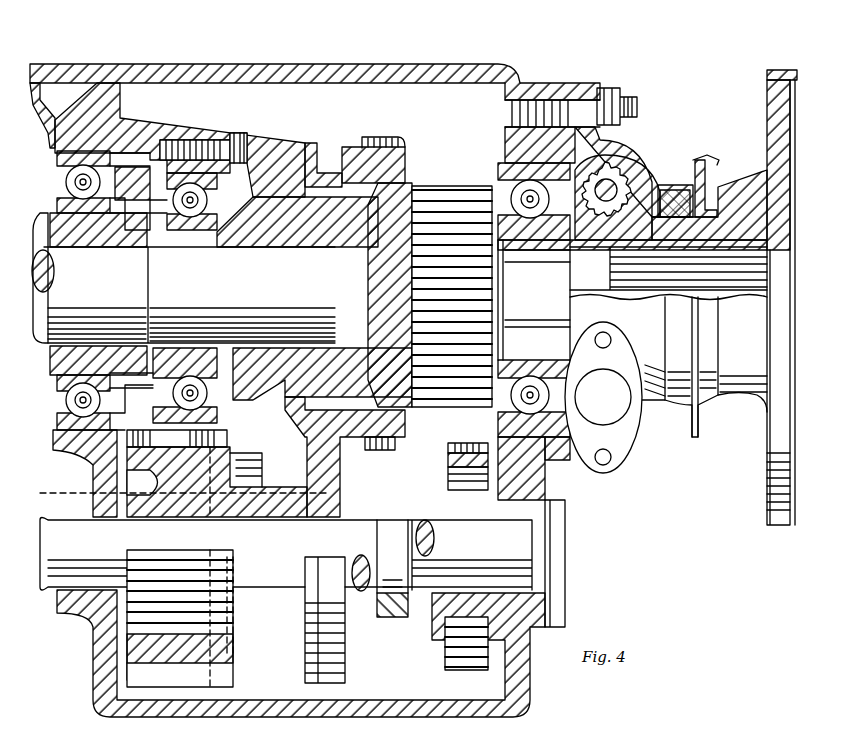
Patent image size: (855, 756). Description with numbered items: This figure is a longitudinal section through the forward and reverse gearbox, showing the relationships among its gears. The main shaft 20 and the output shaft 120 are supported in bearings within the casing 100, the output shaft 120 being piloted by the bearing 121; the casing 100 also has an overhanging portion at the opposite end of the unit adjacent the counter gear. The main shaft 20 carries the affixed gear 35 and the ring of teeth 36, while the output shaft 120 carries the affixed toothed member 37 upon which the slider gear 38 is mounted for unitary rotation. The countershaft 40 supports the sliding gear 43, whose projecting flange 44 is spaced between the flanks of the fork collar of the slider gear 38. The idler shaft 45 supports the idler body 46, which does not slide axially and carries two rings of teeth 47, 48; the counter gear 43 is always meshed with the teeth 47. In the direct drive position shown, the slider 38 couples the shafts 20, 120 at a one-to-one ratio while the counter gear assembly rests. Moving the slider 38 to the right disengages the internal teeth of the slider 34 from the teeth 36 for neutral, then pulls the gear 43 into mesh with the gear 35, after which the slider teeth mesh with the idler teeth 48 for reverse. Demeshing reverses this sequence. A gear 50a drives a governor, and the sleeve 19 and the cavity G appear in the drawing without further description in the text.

The gear housing cavity G is at (143, 85).
The casing 100 is at (462, 72).
The drive shaft sleeve 19 is at (50, 217).
The main shaft 20 is at (50, 346).
The gear 35 is at (267, 147).
The ring of teeth 36 is at (342, 167).
The slider gear 38 is at (372, 137).
The slider 34 is at (405, 160).
The toothed member 37 is at (427, 188).
The bearing 121 is at (515, 200).
The gear 50a is at (620, 181).
The output shaft 120 is at (730, 247).
The ring of teeth 48 is at (457, 447).
The projecting flange 44 is at (332, 447).
The idler body 46 is at (428, 560).
The countershaft 40 is at (425, 558).
The idler shaft 45 is at (392, 617).
The ring of teeth 47 is at (257, 647).
The sliding gear 43 is at (213, 673).